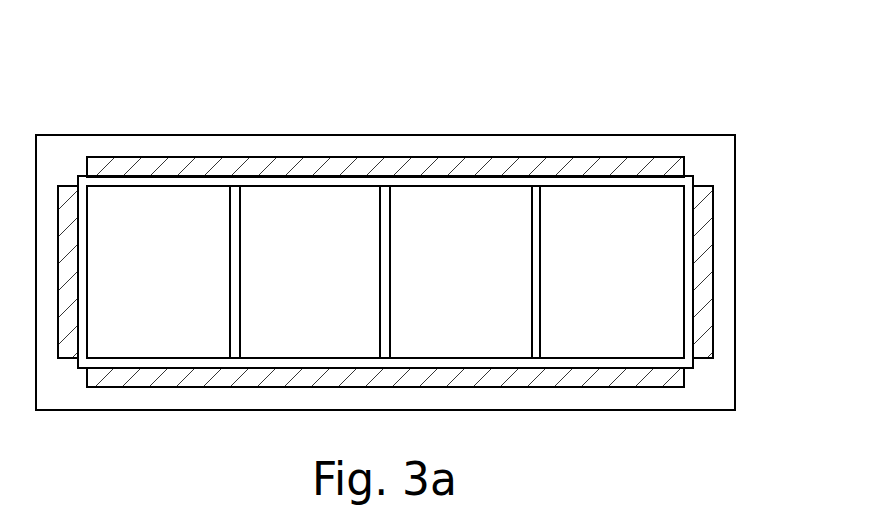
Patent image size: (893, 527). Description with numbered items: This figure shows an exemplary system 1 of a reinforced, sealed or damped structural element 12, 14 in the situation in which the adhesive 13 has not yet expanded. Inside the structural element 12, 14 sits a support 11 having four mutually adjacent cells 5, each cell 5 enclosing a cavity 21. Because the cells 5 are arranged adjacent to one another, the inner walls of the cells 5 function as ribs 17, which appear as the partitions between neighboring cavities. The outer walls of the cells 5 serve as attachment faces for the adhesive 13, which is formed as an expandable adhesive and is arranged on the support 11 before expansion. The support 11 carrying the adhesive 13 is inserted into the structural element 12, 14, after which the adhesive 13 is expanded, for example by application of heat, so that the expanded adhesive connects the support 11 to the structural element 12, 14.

The system 1 is at (110, 72).
The cell 5 is at (342, 203).
The support 11 is at (688, 197).
The structural element 12 is at (500, 135).
The structural element 14 is at (385, 272).
The adhesive 13 is at (602, 173).
The rib 17 is at (390, 229).
The cavity 21 is at (175, 284).